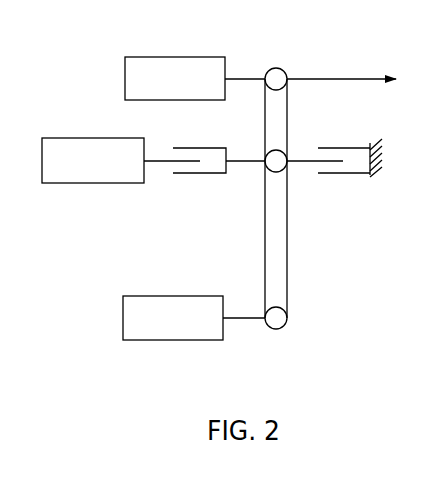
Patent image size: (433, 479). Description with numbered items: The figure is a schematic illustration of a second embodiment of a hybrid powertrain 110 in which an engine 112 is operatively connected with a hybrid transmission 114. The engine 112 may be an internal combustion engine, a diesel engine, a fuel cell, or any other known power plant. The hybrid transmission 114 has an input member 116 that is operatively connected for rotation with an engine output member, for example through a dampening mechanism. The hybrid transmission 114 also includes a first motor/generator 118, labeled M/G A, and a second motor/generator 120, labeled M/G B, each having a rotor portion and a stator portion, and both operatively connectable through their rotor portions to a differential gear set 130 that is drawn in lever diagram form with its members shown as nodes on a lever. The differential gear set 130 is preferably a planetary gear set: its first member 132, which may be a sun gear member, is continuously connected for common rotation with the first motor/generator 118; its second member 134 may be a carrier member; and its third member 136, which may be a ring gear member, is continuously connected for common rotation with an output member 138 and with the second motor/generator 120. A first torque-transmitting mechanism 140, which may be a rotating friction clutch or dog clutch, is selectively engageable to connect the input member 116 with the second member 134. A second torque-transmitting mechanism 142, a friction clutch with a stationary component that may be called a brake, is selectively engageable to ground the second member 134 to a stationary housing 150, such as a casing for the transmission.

The hybrid powertrain 110 is at (88, 225).
The engine 112 is at (103, 138).
The hybrid transmission 114 is at (180, 227).
The input member 116 is at (159, 163).
The first motor/generator 118 is at (193, 296).
The second motor/generator 120 is at (162, 57).
The differential gear set 130 is at (308, 229).
The first member 132 is at (288, 323).
The second member 134 is at (277, 157).
The third member 136 is at (276, 68).
The output member 138 is at (345, 78).
The first torque-transmitting mechanism 140 is at (170, 148).
The second torque-transmitting mechanism 142 is at (316, 168).
The stationary housing 150 is at (377, 138).